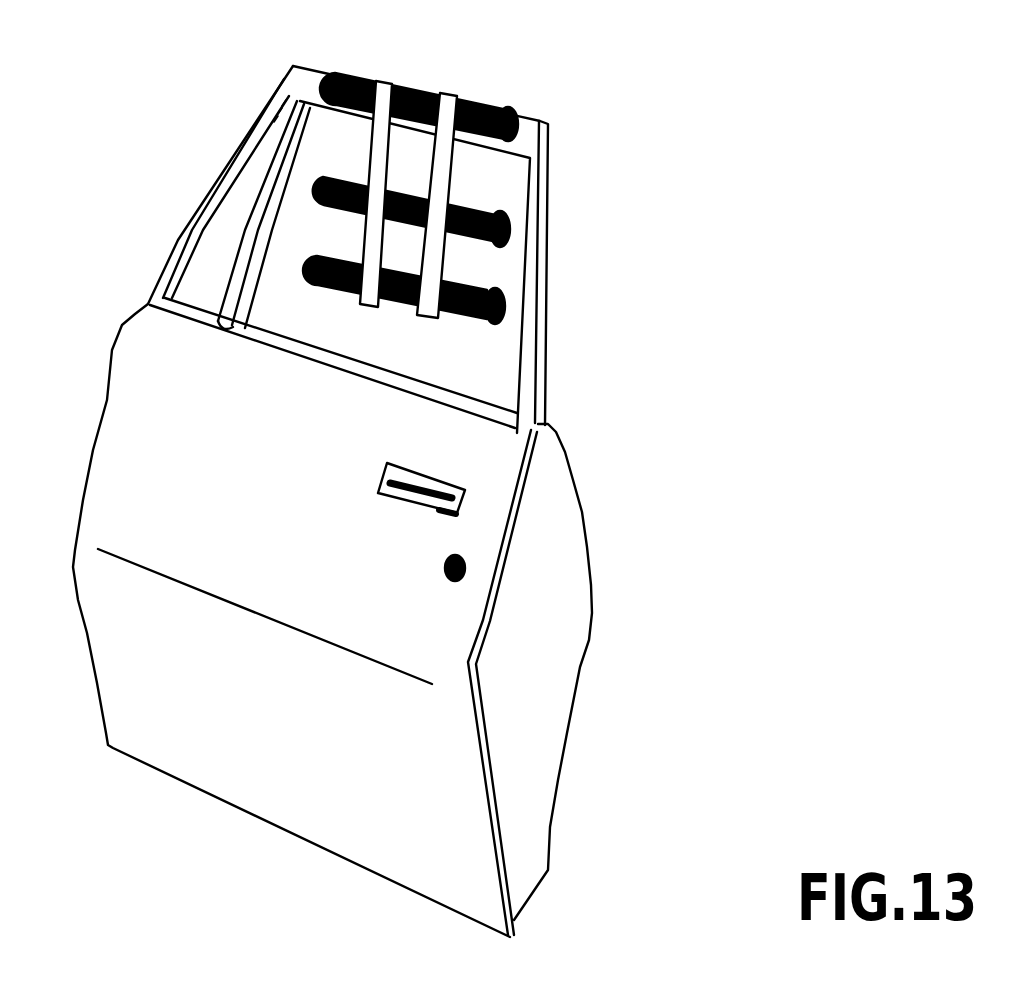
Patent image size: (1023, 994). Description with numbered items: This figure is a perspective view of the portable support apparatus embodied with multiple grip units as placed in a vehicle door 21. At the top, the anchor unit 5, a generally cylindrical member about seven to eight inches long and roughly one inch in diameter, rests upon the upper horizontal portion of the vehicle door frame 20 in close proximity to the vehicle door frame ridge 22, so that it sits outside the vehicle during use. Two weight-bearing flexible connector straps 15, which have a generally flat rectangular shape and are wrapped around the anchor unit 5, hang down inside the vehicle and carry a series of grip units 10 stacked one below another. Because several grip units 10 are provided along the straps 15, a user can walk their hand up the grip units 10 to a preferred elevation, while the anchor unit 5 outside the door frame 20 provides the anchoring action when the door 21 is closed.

The anchor unit 5 is at (451, 180).
The grip unit 10 is at (505, 237).
The flexible connector strap 15 is at (450, 98).
The vehicle door frame 20 is at (547, 140).
The vehicle door 21 is at (332, 617).
The vehicle door frame ridge 22 is at (297, 82).